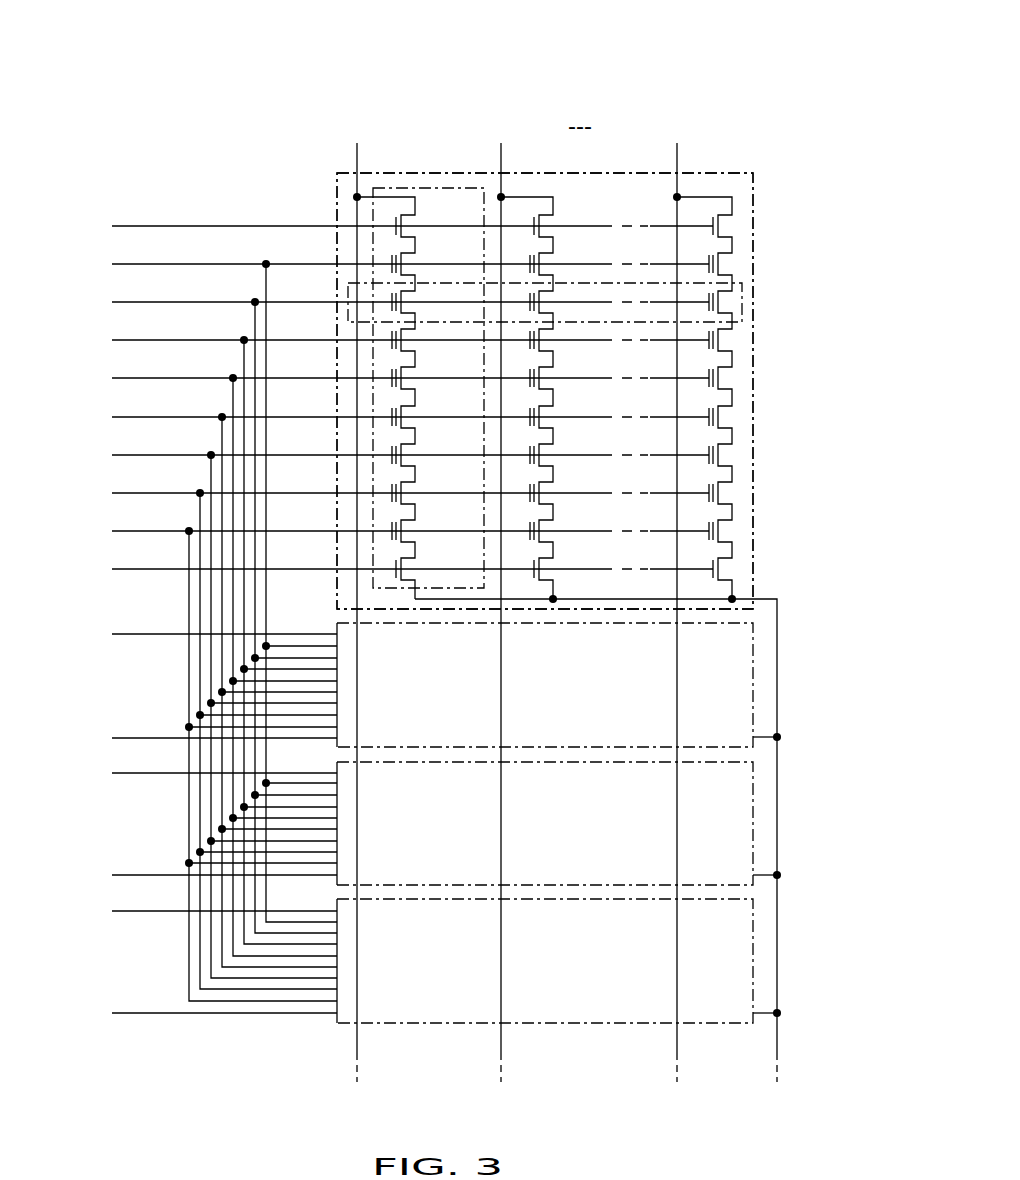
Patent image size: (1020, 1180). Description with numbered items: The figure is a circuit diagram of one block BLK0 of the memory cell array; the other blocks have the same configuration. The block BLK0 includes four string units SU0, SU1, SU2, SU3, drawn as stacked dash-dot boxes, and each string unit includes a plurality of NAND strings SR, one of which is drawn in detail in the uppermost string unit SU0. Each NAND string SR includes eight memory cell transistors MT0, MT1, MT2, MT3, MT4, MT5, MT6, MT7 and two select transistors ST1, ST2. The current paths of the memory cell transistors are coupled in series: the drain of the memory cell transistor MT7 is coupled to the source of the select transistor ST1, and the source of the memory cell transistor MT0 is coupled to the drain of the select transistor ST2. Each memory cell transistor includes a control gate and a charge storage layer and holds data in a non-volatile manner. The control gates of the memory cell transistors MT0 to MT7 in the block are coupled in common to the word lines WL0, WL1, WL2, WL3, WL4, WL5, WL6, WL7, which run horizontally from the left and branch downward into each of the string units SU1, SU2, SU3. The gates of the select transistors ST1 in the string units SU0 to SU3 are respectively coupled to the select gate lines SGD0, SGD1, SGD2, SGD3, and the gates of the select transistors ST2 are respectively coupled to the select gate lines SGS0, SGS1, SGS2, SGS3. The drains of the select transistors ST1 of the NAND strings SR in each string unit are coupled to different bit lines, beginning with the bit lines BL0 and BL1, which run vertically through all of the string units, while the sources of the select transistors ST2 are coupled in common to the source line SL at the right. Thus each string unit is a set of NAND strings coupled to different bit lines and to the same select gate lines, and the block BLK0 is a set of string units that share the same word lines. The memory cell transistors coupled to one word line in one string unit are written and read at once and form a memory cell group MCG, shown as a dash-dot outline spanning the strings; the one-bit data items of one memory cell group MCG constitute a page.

The block BLK0 is at (619, 88).
The string unit SU0 is at (753, 212).
The string unit SU1 is at (753, 695).
The string unit SU2 is at (753, 833).
The string unit SU3 is at (753, 970).
The bit line BL0 is at (357, 600).
The bit line BL1 is at (500, 600).
The source line SL is at (613, 838).
The NAND string SR is at (413, 187).
The memory cell group MCG is at (742, 295).
The select transistor ST1 is at (408, 221).
The select transistor ST2 is at (408, 564).
The memory cell transistor MT0 is at (408, 526).
The memory cell transistor MT1 is at (408, 488).
The memory cell transistor MT2 is at (408, 450).
The memory cell transistor MT3 is at (408, 412).
The memory cell transistor MT4 is at (408, 373).
The memory cell transistor MT5 is at (408, 335).
The memory cell transistor MT6 is at (408, 297).
The memory cell transistor MT7 is at (408, 259).
The select gate line SGD0 is at (382, 226).
The select gate line SGD1 is at (194, 634).
The select gate line SGD2 is at (194, 773).
The select gate line SGD3 is at (194, 911).
The select gate line SGS0 is at (382, 569).
The select gate line SGS1 is at (194, 738).
The select gate line SGS2 is at (194, 875).
The select gate line SGS3 is at (194, 1013).
The word line WL0 is at (388, 759).
The word line WL1 is at (388, 734).
The word line WL2 is at (388, 710).
The word line WL3 is at (388, 685).
The word line WL4 is at (388, 660).
The word line WL5 is at (388, 635).
The word line WL6 is at (388, 611).
The word line WL7 is at (388, 586).